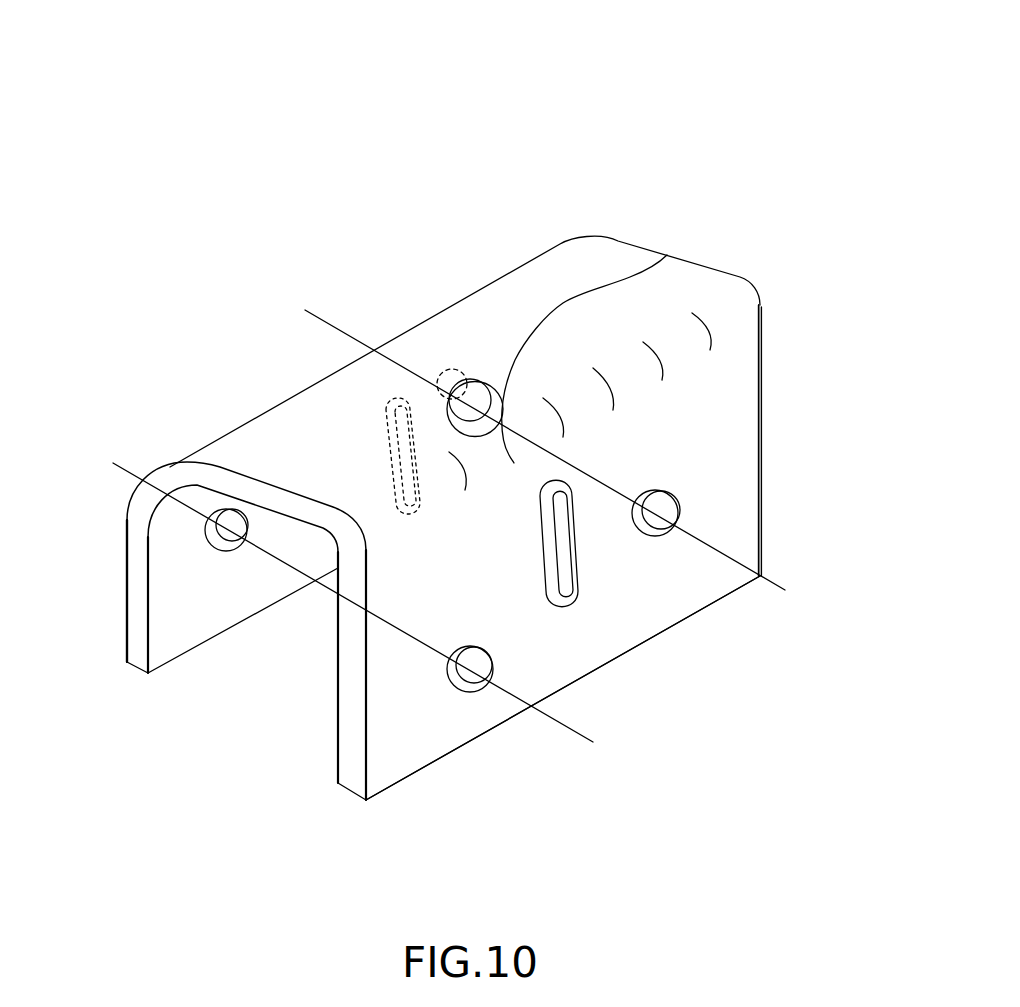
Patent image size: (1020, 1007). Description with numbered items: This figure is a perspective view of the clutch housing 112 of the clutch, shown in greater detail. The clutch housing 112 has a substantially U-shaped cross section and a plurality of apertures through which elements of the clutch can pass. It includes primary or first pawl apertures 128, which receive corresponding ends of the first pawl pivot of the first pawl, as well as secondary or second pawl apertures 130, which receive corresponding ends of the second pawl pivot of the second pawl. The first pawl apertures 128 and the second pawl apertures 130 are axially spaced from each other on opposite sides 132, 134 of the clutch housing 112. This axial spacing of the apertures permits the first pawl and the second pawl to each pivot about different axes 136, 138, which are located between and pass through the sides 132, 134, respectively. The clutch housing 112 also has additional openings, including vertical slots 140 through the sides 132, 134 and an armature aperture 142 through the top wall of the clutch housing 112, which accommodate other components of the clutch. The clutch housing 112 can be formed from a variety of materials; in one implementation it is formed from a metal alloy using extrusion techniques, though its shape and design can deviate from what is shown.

The clutch housing 112 is at (577, 136).
The first pawl apertures 128 is at (460, 370).
The second pawl apertures 130 is at (220, 551).
The side 132 is at (761, 373).
The side 134 is at (126, 605).
The axis 136 is at (770, 581).
The axis 138 is at (578, 728).
The vertical slots 140 is at (386, 437).
The armature aperture 142 is at (667, 255).